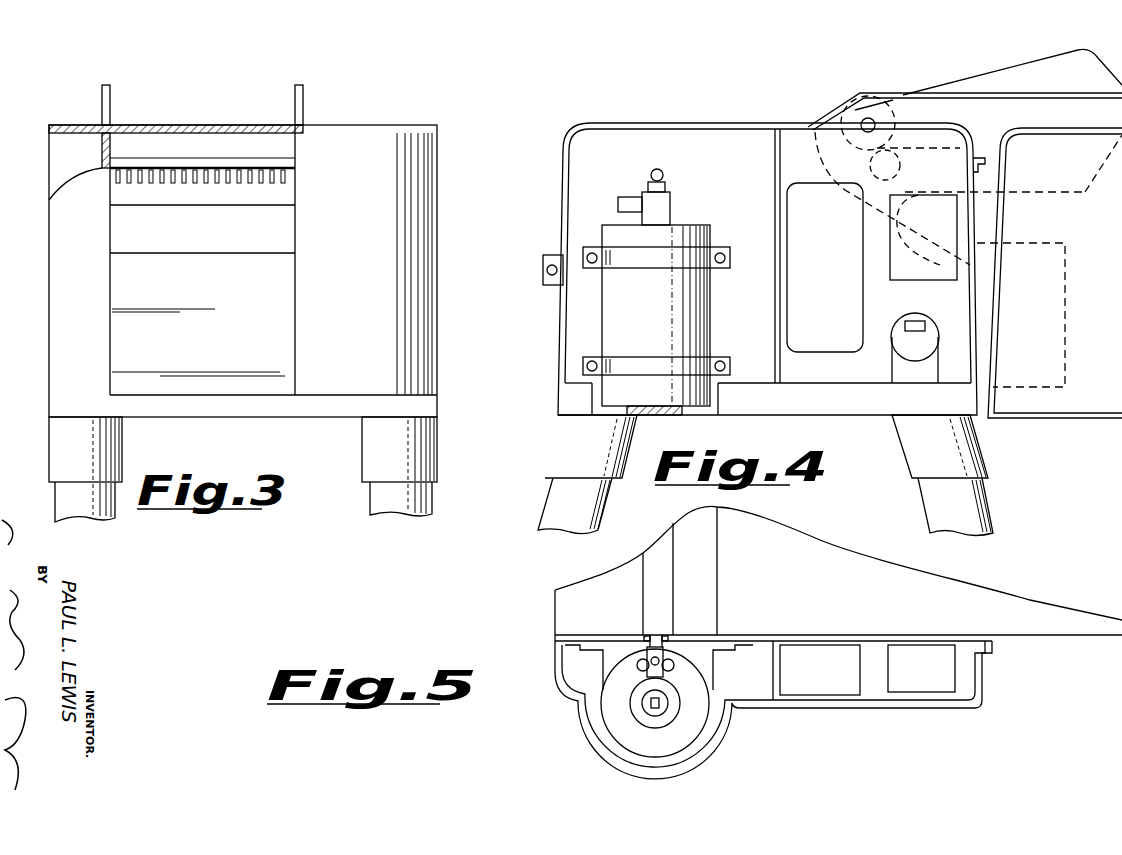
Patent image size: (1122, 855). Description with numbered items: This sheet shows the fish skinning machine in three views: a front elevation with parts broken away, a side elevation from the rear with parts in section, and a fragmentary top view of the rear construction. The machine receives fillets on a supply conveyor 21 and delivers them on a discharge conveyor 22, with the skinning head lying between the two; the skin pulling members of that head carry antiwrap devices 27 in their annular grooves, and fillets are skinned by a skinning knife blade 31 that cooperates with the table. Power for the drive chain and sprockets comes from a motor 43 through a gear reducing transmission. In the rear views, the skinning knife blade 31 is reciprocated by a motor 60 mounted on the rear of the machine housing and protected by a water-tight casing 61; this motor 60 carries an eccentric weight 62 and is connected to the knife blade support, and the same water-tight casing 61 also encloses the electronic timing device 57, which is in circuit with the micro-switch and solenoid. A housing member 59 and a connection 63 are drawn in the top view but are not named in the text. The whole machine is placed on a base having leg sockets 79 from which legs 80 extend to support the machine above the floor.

In FIG. 4, the supply conveyor 21 is at (1032, 90).
In FIG. 3, the discharge conveyor 22 is at (222, 124).
In FIG. 3, the antiwrap devices 27 is at (181, 185).
In FIG. 5, the skinning knife blade 31 is at (703, 593).
In FIG. 4, the motor 43 is at (1035, 322).
In FIG. 4, the electronic timing device 57 is at (826, 286).
In FIG. 5, the electronic timing device 57 is at (828, 679).
In FIG. 5, the housing 59 is at (756, 712).
In FIG. 4, the motor 60 is at (690, 322).
In FIG. 5, the motor 60 is at (645, 742).
In FIG. 4, the water-tight casing 61 is at (661, 150).
In FIG. 4, the eccentric weight 62 is at (666, 206).
In FIG. 5, the eccentric weight 62 is at (675, 698).
In FIG. 5, the coupling 63 is at (650, 660).
In FIG. 3, the leg sockets 79 is at (112, 447).
In FIG. 4, the leg sockets 79 is at (966, 458).
In FIG. 3, the legs 80 is at (108, 510).
In FIG. 4, the legs 80 is at (594, 515).